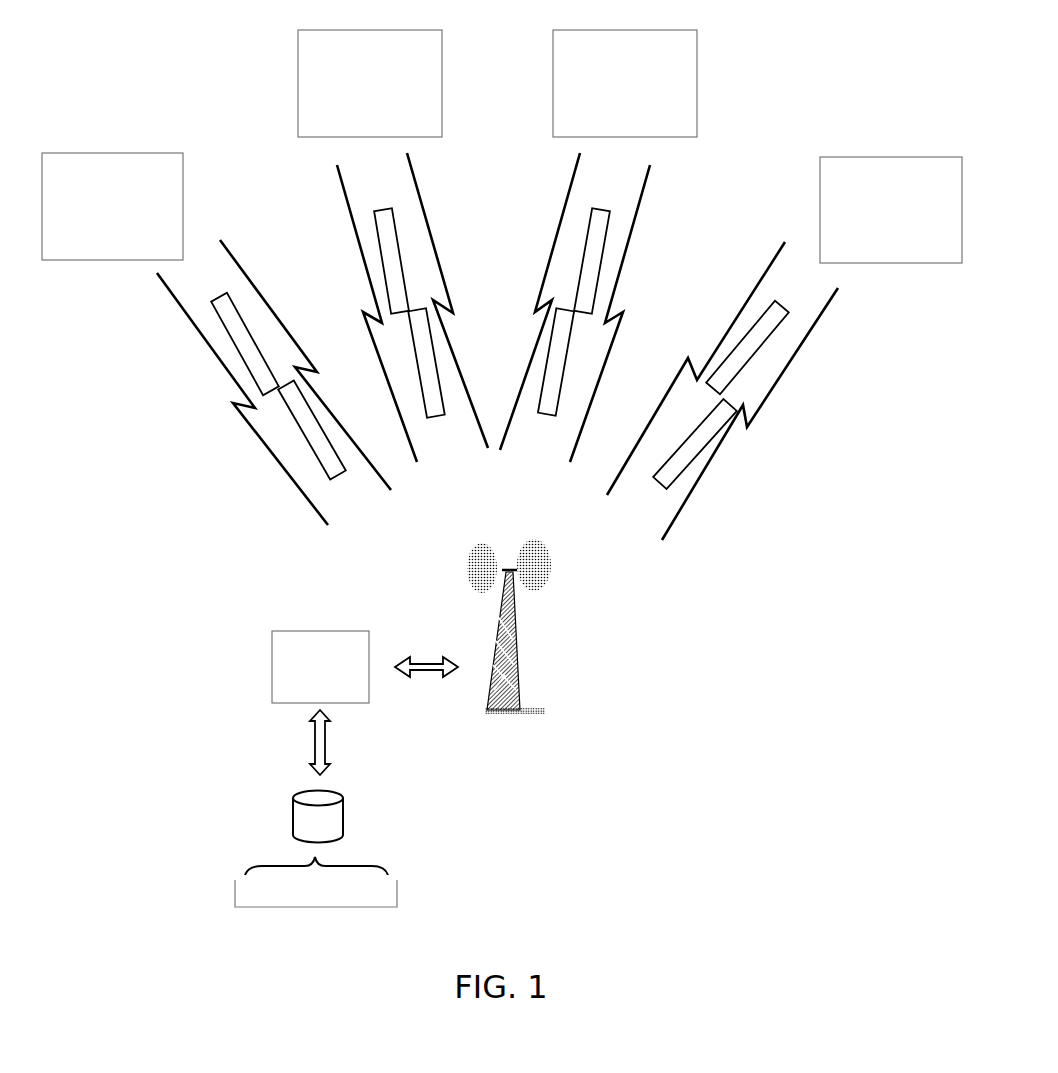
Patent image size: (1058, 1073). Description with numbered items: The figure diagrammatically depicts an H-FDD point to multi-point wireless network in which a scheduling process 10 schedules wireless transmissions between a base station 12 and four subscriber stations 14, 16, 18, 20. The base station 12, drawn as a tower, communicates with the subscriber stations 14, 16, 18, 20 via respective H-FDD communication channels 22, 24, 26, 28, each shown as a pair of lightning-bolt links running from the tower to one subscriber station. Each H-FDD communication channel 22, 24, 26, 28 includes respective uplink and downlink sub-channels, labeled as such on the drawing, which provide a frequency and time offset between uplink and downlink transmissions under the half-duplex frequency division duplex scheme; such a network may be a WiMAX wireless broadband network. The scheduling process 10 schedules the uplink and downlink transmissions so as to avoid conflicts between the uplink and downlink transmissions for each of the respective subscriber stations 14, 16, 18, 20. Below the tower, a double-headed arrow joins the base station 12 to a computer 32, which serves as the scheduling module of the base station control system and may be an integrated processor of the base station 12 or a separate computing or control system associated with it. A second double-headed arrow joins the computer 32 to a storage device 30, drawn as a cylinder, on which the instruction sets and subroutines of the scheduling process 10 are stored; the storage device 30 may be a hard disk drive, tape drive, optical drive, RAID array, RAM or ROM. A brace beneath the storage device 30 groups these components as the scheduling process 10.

The scheduling process 10 is at (235, 897).
The base station 12 is at (520, 650).
The subscriber station 14 is at (112, 206).
The subscriber station 16 is at (370, 83).
The subscriber station 18 is at (625, 83).
The subscriber station 20 is at (891, 210).
The H-FDD communication channel 22 is at (208, 346).
The H-FDD communication channel 24 is at (358, 245).
The H-FDD communication channel 26 is at (565, 193).
The H-FDD communication channel 28 is at (765, 267).
The storage device 30 is at (293, 826).
The computer 32 is at (272, 667).